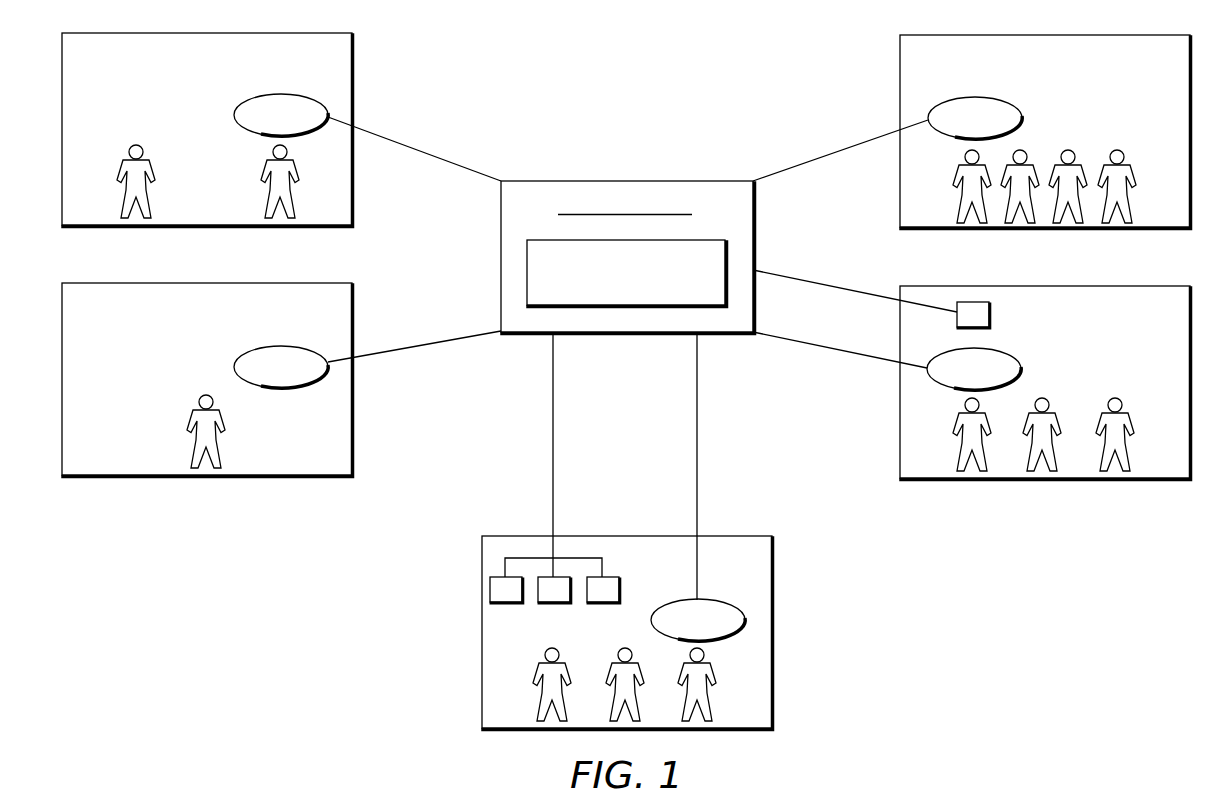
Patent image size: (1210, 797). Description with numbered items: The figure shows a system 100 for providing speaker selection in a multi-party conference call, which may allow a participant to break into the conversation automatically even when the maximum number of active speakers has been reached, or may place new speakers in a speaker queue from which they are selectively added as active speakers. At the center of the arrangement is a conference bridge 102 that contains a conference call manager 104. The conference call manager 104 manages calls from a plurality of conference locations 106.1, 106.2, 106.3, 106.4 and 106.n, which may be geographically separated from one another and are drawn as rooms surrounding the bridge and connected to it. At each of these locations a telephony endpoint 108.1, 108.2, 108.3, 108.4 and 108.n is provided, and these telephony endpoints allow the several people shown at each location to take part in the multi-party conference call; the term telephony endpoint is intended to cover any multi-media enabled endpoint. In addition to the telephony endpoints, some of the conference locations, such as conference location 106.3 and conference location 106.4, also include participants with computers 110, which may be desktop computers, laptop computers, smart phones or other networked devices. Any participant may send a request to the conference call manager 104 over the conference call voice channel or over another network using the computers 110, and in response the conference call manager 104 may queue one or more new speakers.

The system 100 is at (612, 66).
The conference bridge 102 is at (627, 177).
The conference call manager 104 is at (707, 239).
The conference location 106.1 is at (354, 63).
The conference location 106.2 is at (355, 313).
The conference location 106.3 is at (772, 571).
The conference location 106.4 is at (900, 318).
The conference location 106.n is at (900, 68).
The telephony endpoint 108.1 is at (247, 103).
The telephony endpoint 108.2 is at (246, 352).
The telephony endpoint 108.3 is at (723, 598).
The telephony endpoint 108.4 is at (1006, 351).
The telephony endpoint 108.n is at (1006, 103).
The computers 110 is at (990, 315).